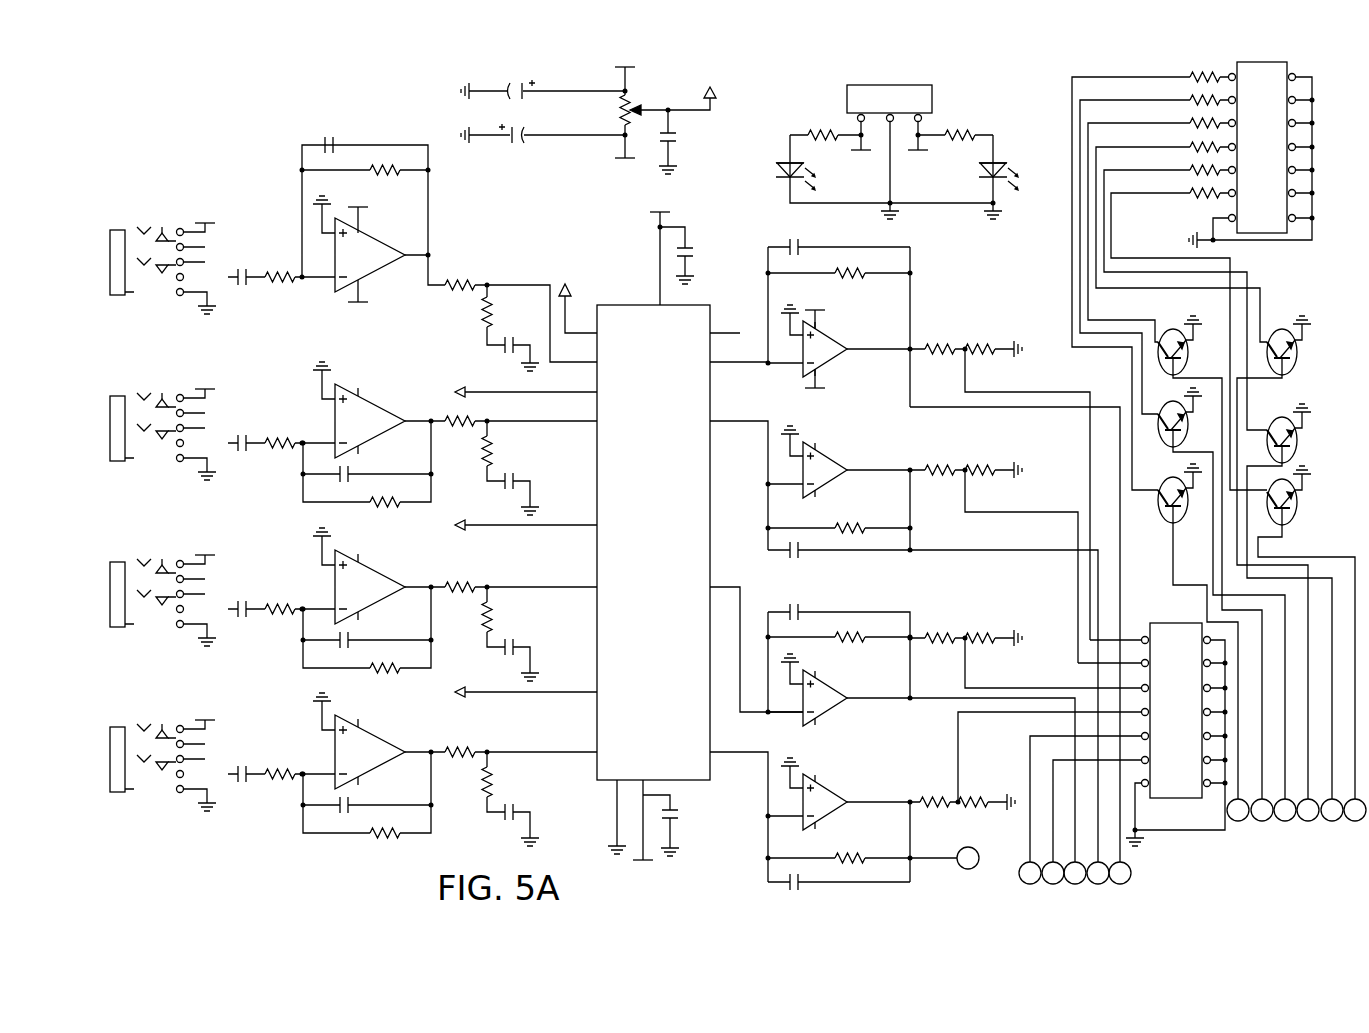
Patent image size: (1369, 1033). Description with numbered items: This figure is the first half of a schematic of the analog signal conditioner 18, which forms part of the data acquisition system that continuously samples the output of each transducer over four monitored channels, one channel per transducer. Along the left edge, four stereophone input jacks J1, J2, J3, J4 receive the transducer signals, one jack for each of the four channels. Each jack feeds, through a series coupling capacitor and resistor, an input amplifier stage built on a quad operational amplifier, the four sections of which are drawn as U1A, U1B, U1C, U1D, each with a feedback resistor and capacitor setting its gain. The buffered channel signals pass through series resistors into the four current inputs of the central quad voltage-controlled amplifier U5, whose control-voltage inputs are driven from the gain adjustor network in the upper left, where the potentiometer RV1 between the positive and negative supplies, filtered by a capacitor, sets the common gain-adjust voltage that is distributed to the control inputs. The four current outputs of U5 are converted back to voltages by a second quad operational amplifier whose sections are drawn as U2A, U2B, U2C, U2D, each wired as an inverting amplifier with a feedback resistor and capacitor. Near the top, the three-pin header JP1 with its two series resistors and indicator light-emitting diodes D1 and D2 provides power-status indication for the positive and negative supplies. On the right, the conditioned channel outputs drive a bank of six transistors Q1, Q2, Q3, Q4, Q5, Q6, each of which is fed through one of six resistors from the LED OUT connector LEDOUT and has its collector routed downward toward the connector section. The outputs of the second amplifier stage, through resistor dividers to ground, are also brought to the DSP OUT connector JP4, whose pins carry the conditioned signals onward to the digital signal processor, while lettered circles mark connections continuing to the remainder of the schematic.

The signal conditioner 18 is at (228, 128).
The SSM2164P quad VCA U5 is at (629, 540).
The input op-amp channel 1 U1A is at (447, 253).
The input op-amp channel 2 U1B is at (449, 444).
The input op-amp channel 3 U1C is at (449, 610).
The input op-amp channel 4 U1D is at (449, 775).
The output op-amp channel 1 U2A is at (935, 542).
The output op-amp channel 2 U2B is at (932, 642).
The output op-amp channel 3 U2C is at (948, 724).
The output op-amp channel 4 U2D is at (954, 808).
The stereophone jack 1 J1 is at (220, 275).
The stereophone jack 2 J2 is at (220, 441).
The stereophone jack 3 J3 is at (220, 607).
The stereophone jack 4 J4 is at (220, 772).
The header 3 JP1 is at (891, 132).
The DSP out connector JP4 is at (1192, 744).
The gain adjust potentiometer RV1 is at (596, 115).
The LED D1 is at (813, 157).
The LED D2 is at (974, 163).
The transistor 2N3904 Q1 is at (1158, 366).
The transistor 2N3904 Q2 is at (1158, 431).
The transistor 2N3904 Q3 is at (1158, 507).
The transistor 2N3904 Q4 is at (1281, 324).
The transistor 2N3904 Q5 is at (1272, 417).
The transistor 2N3904 Q6 is at (1290, 517).
The LED out connector LEDOUT is at (1193, 264).